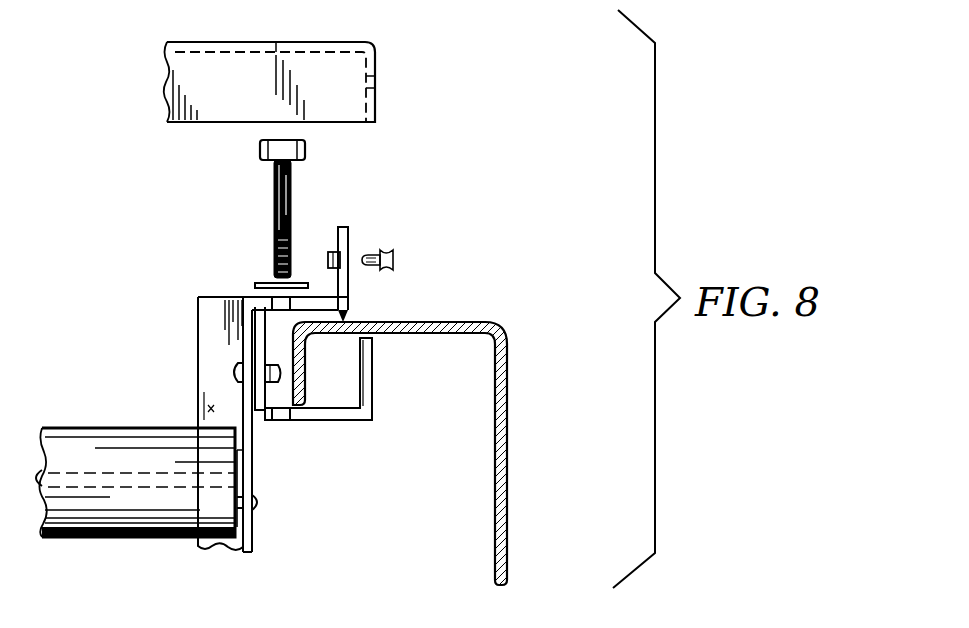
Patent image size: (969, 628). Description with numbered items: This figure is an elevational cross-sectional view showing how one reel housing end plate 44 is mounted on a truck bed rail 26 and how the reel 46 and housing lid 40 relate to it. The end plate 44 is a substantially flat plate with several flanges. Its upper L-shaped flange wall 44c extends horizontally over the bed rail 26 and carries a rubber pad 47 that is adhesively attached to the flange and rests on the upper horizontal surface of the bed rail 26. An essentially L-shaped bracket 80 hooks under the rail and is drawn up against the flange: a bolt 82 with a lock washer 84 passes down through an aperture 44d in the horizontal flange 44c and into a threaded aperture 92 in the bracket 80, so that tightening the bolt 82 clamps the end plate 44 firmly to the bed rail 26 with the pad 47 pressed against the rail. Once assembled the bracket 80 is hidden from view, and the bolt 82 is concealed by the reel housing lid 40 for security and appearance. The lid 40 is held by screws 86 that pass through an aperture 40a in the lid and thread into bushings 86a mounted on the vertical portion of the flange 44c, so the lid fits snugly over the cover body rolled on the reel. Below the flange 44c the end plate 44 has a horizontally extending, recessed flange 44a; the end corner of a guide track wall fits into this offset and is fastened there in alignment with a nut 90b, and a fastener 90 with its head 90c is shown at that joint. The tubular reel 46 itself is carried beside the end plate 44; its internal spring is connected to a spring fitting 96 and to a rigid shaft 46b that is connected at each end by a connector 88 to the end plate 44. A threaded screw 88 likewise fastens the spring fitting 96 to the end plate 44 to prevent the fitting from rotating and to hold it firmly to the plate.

The truck bed rail 26 is at (505, 512).
The reel housing lid 40 is at (320, 42).
The aperture 40a is at (365, 88).
The end plate 44 is at (253, 528).
The flange 44a is at (262, 340).
The L-shaped flange wall 44c is at (347, 228).
The aperture 44d is at (275, 300).
The reel 46 is at (167, 498).
The rigid shaft 46b is at (30, 420).
The rubber pad 47 is at (363, 347).
The bracket 80 is at (373, 405).
The bolt 82 is at (292, 192).
The lock washer 84 is at (268, 284).
The screw 86 is at (393, 259).
The threaded bushing 86a is at (340, 268).
The threaded screw 88 is at (260, 500).
The bolt 90 is at (228, 380).
The nut 90b is at (273, 387).
The bolt head 90c is at (236, 370).
The threaded aperture 92 is at (280, 422).
The spring fitting 96 is at (200, 400).